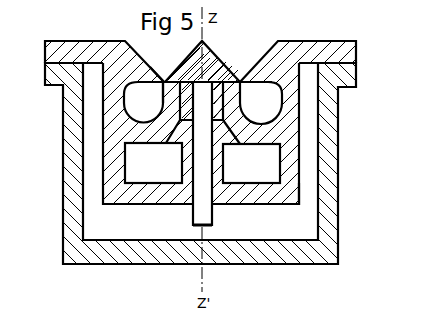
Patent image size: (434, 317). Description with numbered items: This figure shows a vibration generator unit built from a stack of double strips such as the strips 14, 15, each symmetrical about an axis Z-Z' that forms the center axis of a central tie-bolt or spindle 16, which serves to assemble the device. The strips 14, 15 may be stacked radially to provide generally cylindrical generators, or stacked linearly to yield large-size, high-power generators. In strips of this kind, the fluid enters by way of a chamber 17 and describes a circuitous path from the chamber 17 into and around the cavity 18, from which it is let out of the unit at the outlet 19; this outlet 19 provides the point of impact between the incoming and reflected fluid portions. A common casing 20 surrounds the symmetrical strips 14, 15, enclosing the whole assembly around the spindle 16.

The strip 14 is at (107, 200).
The strip 15 is at (264, 197).
The central tie-bolt or spindle 16 is at (199, 91).
The chamber 17 is at (147, 170).
The cavity 18 is at (137, 107).
The outlet 19 is at (163, 80).
The common casing 20 is at (334, 210).